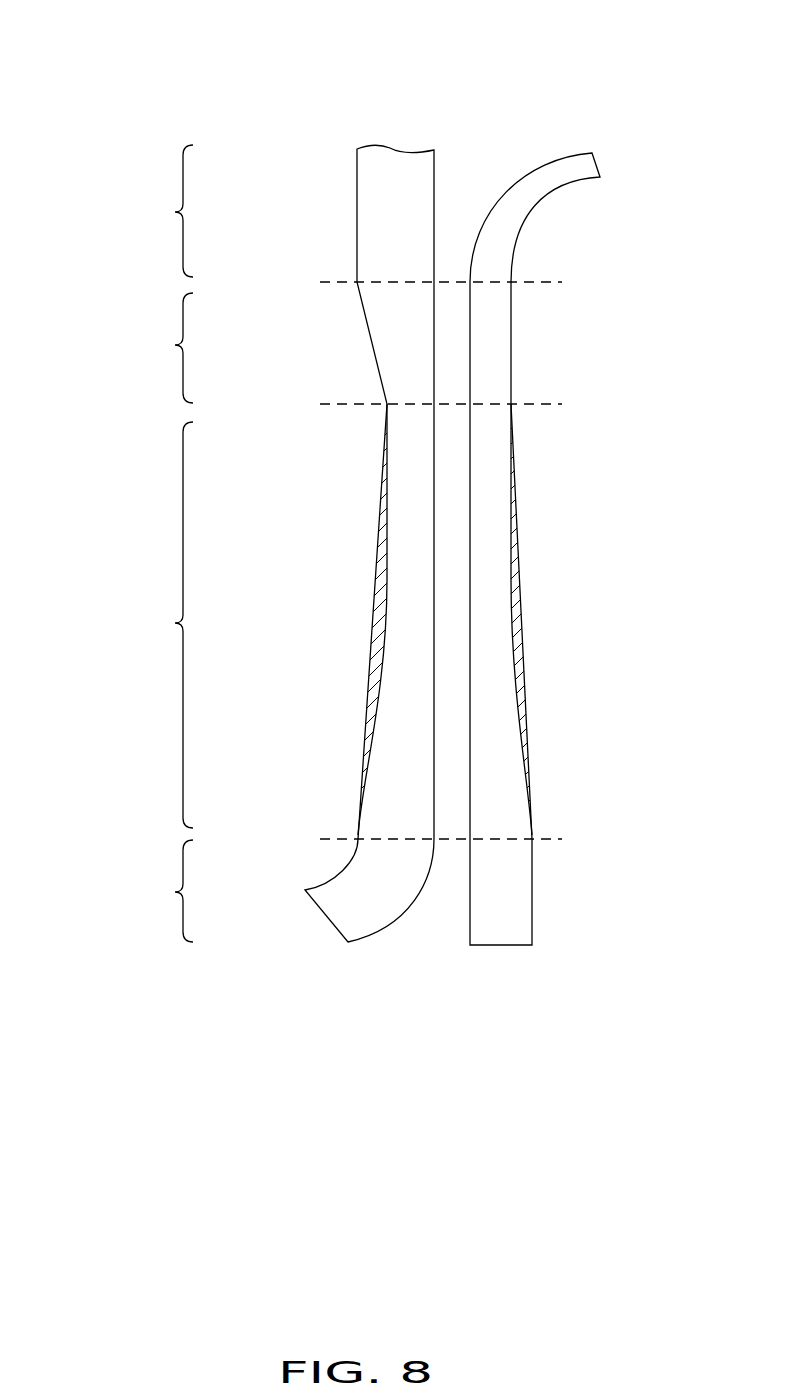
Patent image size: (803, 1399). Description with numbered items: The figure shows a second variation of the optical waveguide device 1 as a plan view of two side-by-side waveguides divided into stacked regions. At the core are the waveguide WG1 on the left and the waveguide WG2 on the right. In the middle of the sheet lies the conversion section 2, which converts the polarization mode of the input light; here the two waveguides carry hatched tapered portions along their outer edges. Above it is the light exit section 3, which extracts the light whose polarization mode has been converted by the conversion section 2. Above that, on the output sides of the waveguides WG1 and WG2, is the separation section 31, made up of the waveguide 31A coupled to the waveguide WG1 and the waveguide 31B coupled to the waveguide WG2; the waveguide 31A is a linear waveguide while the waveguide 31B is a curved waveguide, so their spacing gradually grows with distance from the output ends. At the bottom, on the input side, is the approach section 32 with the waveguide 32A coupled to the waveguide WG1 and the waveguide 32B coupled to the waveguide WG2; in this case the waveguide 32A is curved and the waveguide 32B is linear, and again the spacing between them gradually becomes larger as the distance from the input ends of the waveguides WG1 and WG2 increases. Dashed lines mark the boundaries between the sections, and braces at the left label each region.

The optical waveguide device 1 is at (663, 68).
The waveguide WG1 is at (401, 543).
The waveguide WG2 is at (406, 549).
The waveguide 31A is at (357, 193).
The waveguide 31B is at (567, 188).
The waveguide 32A is at (396, 927).
The waveguide 32B is at (533, 912).
The separation section 31 is at (116, 211).
The light exit section 3 is at (116, 348).
The conversion section 2 is at (116, 625).
The approach section 32 is at (116, 891).